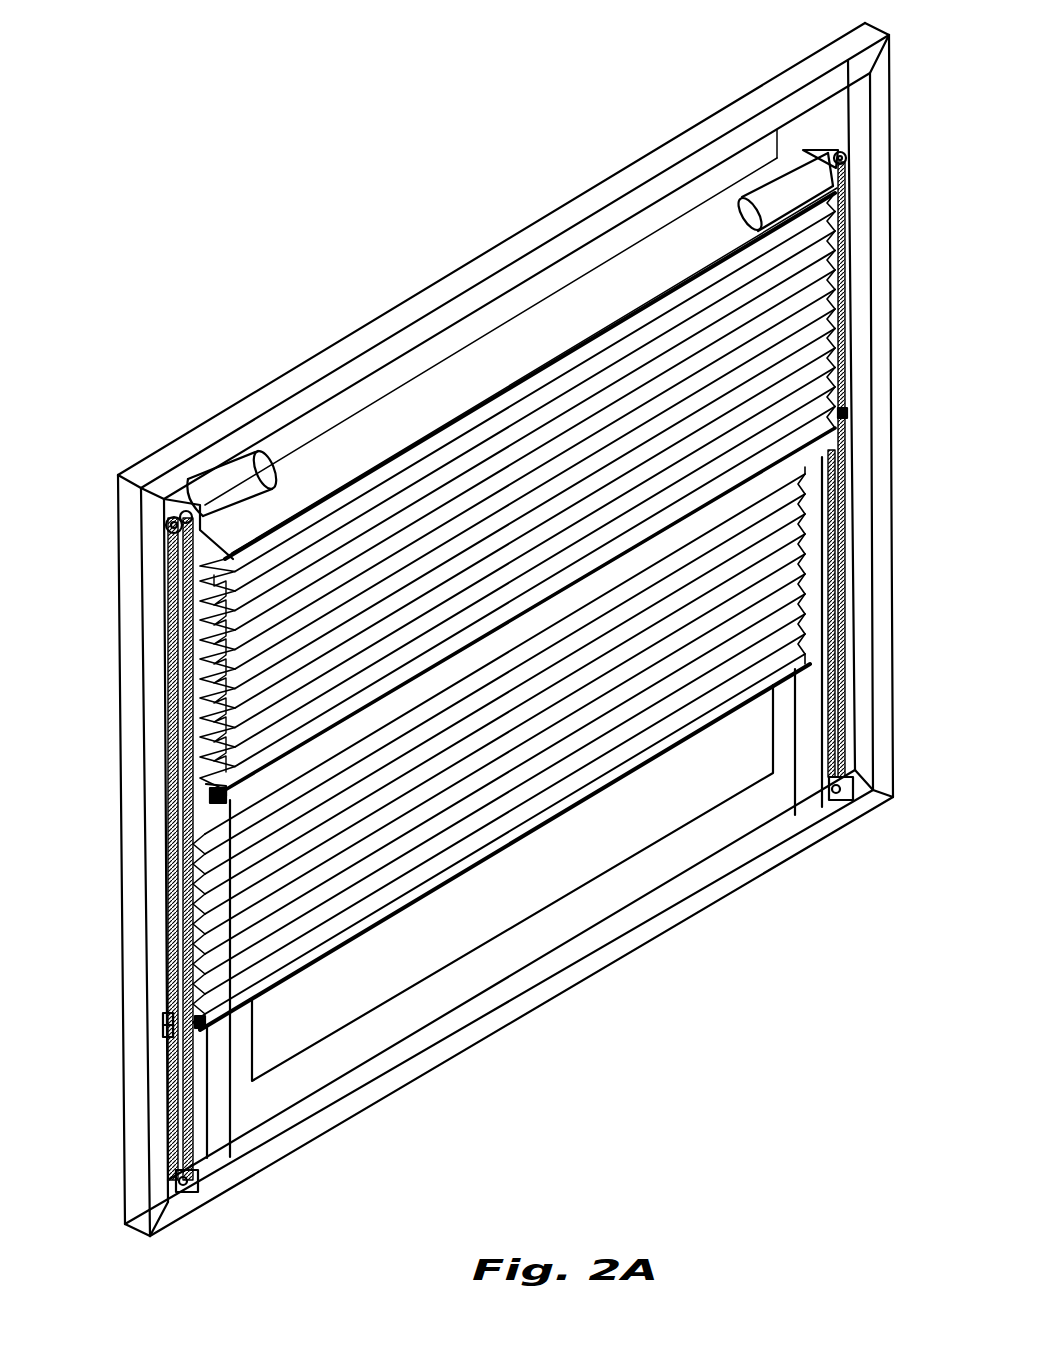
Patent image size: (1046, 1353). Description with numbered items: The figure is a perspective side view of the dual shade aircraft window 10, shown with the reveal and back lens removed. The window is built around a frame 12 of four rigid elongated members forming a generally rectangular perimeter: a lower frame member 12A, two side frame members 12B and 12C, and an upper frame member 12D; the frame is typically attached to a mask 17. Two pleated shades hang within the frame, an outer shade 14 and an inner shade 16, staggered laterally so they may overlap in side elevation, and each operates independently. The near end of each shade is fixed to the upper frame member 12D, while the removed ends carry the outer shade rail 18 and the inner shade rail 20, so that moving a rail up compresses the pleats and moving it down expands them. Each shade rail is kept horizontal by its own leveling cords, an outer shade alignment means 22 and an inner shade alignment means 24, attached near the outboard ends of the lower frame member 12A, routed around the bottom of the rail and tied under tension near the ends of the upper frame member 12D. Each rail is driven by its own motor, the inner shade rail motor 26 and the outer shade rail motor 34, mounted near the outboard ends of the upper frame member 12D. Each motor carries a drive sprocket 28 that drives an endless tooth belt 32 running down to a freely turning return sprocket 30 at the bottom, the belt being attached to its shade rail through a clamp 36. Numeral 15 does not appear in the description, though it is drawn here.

The aircraft window 10 is at (376, 189).
The frame 12 is at (356, 311).
The lower frame member 12A is at (593, 973).
The side frame member 12B is at (893, 592).
The side frame member 12C is at (128, 878).
The upper frame member 12D is at (545, 229).
The outer shade 14 is at (512, 510).
The bottom rail 15 is at (457, 922).
The inner shade 16 is at (515, 723).
The mask 17 is at (460, 983).
The outer shade rail 18 is at (228, 798).
The inner shade rail 20 is at (166, 1026).
The outer shade alignment means 22 is at (232, 1120).
The inner shade alignment means 24 is at (207, 1087).
The inner shade rail motor 26 is at (258, 481).
The drive sprocket 28 is at (168, 518).
The return sprocket 30 is at (188, 1187).
The endless tooth belt 32 is at (162, 726).
The outer shade rail motor 34 is at (742, 208).
The clamp 36 is at (200, 1023).